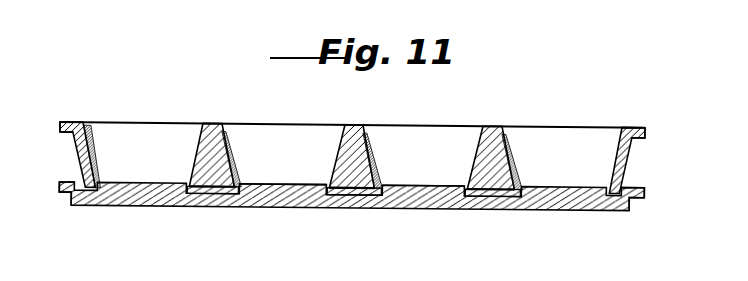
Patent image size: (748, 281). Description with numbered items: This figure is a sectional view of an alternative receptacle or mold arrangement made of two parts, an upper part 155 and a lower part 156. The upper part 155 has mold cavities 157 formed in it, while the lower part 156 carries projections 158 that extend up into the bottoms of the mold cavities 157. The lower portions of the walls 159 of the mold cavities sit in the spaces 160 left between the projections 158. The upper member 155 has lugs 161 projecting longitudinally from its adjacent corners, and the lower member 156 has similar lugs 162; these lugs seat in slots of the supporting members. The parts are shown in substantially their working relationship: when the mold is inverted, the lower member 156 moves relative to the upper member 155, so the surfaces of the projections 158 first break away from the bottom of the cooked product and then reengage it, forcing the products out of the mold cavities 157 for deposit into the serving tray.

The upper part 155 is at (631, 152).
The lower part 156 is at (556, 207).
The mold cavities 157 is at (239, 131).
The projections 158 is at (436, 178).
The walls of the mold cavities 159 is at (211, 186).
The spaces 160 is at (230, 192).
The lugs 161 is at (59, 127).
The lugs 162 is at (60, 187).